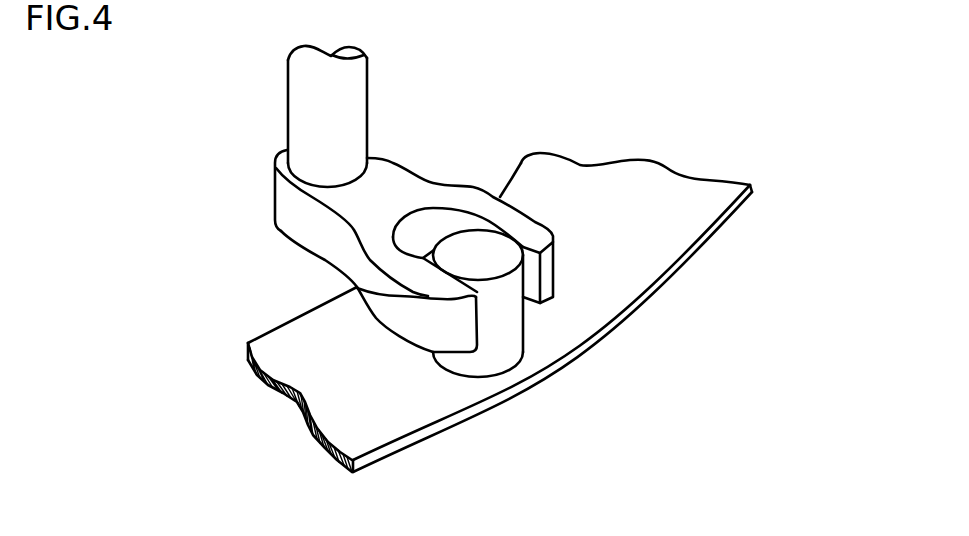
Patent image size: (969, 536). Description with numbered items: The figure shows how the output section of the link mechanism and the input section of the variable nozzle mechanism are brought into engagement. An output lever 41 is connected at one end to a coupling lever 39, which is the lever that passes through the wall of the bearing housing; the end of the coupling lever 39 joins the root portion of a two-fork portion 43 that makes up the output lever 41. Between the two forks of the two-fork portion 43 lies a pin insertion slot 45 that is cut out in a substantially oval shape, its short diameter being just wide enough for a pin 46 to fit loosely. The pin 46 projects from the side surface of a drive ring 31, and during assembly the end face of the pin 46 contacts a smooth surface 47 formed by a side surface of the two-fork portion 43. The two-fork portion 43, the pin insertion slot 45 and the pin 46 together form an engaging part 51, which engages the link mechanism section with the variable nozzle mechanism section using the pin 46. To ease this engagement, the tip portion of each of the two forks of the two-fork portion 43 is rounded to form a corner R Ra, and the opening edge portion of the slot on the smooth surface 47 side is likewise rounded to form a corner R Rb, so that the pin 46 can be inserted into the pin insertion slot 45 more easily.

The drive ring 31 is at (603, 177).
The coupling lever 39 is at (287, 101).
The output lever 41 is at (393, 163).
The two-fork portion 43 is at (497, 193).
The pin insertion slot 45 is at (434, 208).
The pin 46 is at (503, 350).
The smooth surface 47 is at (424, 354).
The engaging part 51 is at (606, 253).
The corner R at fork tip Ra is at (525, 238).
The corner R at opening edge Rb is at (541, 306).